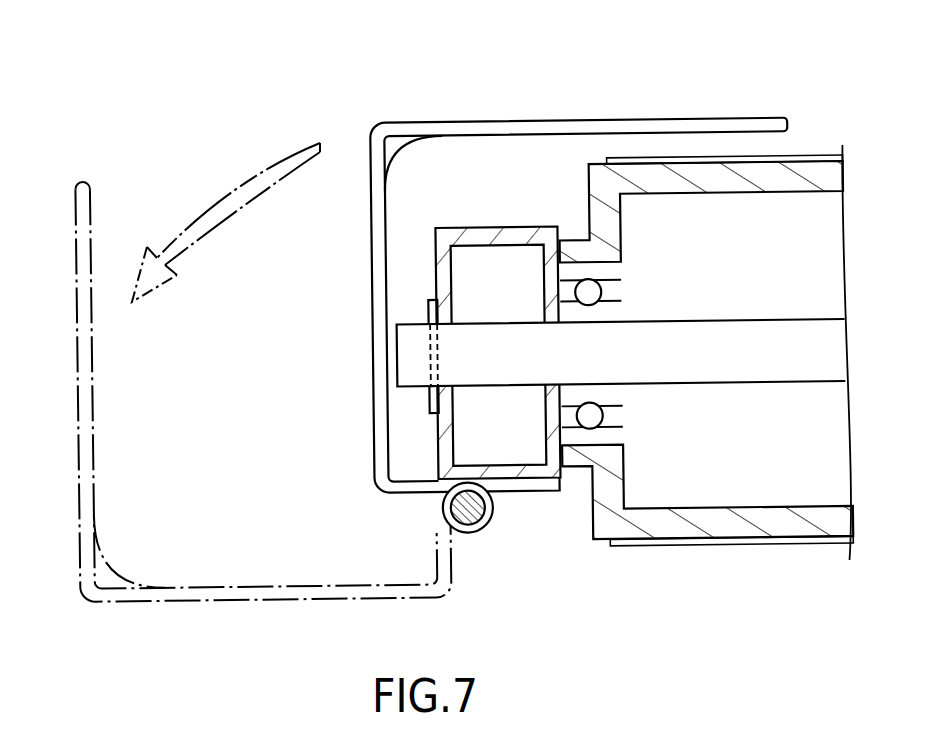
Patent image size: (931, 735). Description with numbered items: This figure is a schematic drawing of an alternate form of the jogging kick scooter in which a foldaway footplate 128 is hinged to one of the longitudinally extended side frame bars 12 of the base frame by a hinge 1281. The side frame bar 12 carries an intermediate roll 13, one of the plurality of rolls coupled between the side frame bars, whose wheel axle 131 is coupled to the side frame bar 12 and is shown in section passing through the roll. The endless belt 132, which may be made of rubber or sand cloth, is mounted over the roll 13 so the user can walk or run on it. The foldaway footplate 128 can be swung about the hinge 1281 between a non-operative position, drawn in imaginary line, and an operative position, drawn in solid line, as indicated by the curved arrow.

The side frame bar 12 is at (534, 469).
The intermediate roll 13 is at (744, 172).
The wheel axle 131 is at (688, 373).
The endless belt 132 is at (672, 158).
The foldaway footplate 128 is at (498, 122).
The hinge 1281 is at (476, 532).